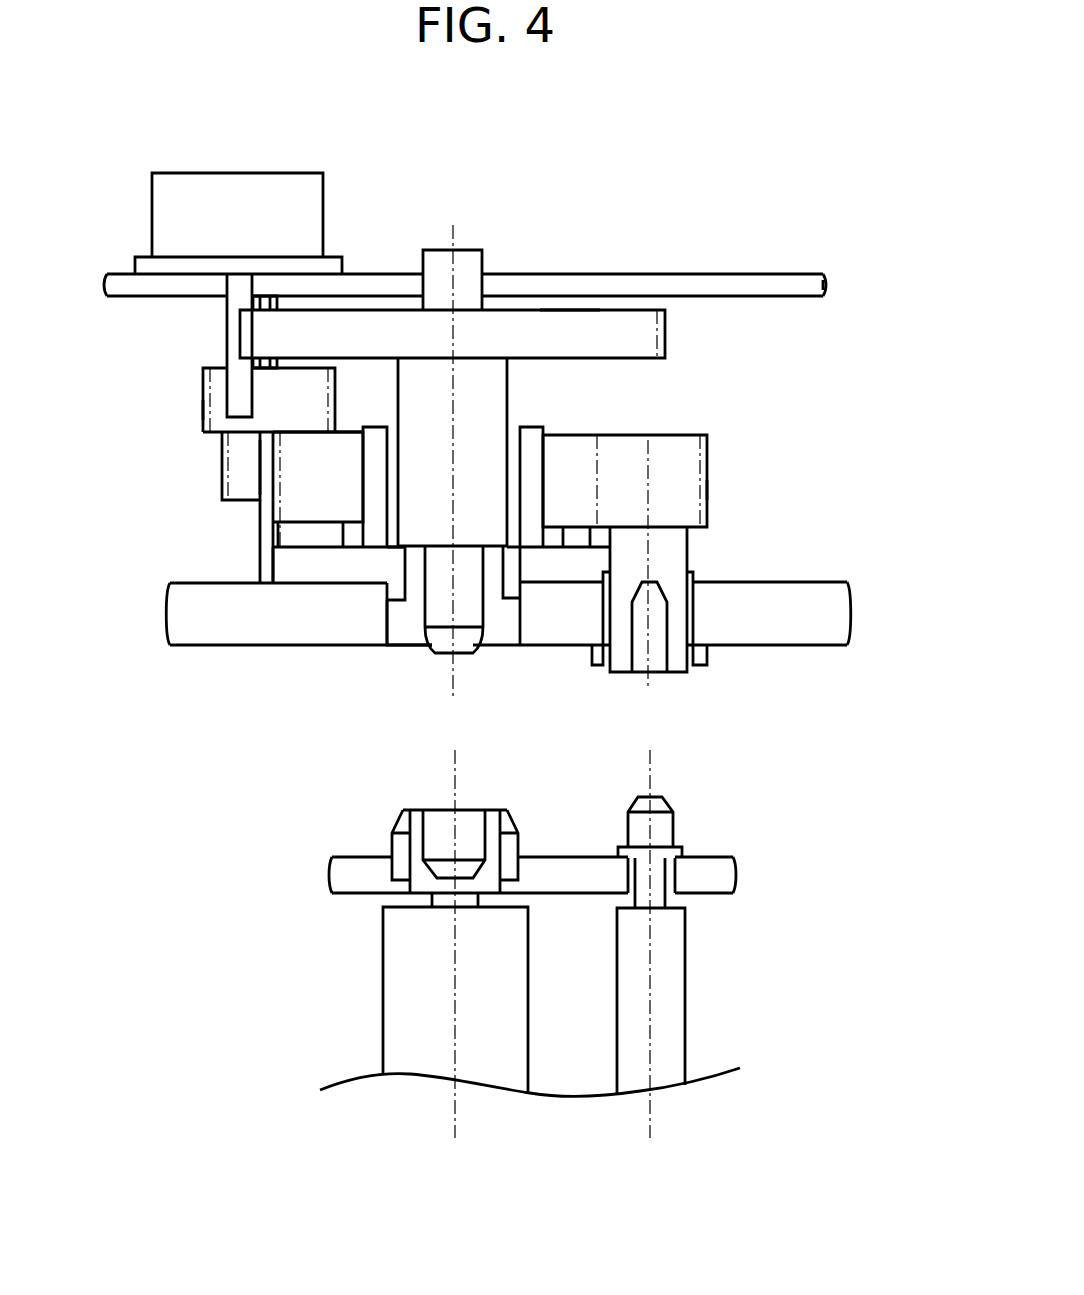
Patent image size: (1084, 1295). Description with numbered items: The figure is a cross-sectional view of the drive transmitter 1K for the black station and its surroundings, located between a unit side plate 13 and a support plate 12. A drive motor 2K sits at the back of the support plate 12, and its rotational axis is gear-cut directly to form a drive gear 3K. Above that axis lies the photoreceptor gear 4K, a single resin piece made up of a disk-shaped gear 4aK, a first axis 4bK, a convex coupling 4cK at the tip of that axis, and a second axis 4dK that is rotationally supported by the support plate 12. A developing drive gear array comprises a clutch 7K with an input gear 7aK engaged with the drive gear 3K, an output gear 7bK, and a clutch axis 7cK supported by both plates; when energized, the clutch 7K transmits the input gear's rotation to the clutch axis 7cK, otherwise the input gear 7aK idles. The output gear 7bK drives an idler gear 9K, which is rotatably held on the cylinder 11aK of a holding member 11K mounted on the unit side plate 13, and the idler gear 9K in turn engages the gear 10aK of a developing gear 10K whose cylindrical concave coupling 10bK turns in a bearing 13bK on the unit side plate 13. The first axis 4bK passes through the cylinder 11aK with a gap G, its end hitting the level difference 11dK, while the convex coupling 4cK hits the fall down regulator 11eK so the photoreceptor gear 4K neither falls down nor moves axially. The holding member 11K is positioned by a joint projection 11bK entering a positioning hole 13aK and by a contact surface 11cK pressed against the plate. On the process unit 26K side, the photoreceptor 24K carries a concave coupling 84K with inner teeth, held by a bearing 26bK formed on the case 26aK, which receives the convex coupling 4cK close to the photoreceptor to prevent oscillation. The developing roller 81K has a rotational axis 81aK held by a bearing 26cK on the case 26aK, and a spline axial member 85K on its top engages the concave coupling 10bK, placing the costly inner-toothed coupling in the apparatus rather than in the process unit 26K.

The drive transmitter 1K is at (835, 383).
The drive motor 2K is at (280, 173).
The drive gear 3K is at (225, 320).
The photoreceptor gear 4K is at (670, 333).
The gear 4aK is at (572, 308).
The first axis 4bK is at (507, 375).
The convex coupling 4cK is at (486, 620).
The second axis 4dK is at (467, 245).
The clutch 7K is at (133, 412).
The input gear 7aK is at (202, 375).
The output gear 7bK is at (222, 443).
The clutch axis 7cK is at (260, 520).
The idler gear 9K is at (270, 478).
The developing gear 10K is at (742, 525).
The gear 10aK is at (708, 453).
The cylindrical concave coupling 10bK is at (687, 553).
The holding member 11K is at (540, 416).
The cylinder 11aK is at (372, 426).
The joint projection 11bK is at (395, 608).
The contact surface 11cK is at (288, 560).
The level difference 11dK is at (363, 515).
The fall down regulator 11eK is at (386, 586).
The support plate 12 is at (728, 272).
The unit side plate 13 is at (827, 648).
The positioning hole 13aK is at (512, 633).
The bearing 13bK is at (708, 660).
The gap G is at (385, 512).
The photoreceptor 24K is at (383, 1003).
The process unit 26K is at (325, 958).
The case 26aK is at (357, 856).
The bearing 26bK is at (395, 822).
The bearing 26cK is at (620, 845).
The developing roller 81K is at (685, 982).
The rotational axis 81aK is at (667, 900).
The concave coupling 84K is at (470, 810).
The spline axial member 85K is at (675, 822).